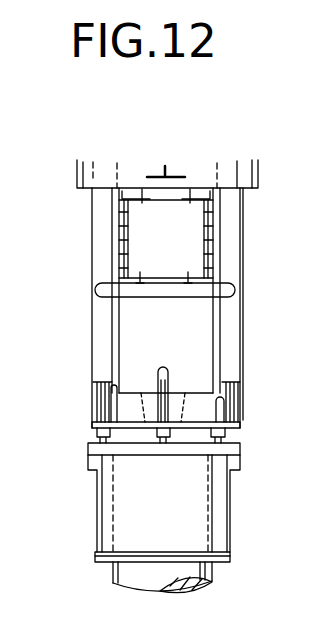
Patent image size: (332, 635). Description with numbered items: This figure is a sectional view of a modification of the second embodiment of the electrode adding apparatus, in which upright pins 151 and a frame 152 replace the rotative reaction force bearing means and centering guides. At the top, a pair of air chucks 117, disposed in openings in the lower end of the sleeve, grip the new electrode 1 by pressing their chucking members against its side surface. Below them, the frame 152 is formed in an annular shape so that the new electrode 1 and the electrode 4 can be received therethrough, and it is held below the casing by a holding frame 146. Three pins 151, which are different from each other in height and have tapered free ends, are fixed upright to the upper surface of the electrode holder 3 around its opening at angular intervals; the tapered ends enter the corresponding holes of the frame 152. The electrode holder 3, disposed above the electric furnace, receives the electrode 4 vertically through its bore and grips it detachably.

The new electrode 1 is at (203, 320).
The electrode holder 3 is at (225, 510).
The electrode 4 is at (212, 580).
The air chuck 117 is at (133, 246).
The holding frame 146 is at (98, 344).
The upright pins 151 is at (115, 393).
The frame 152 is at (233, 427).